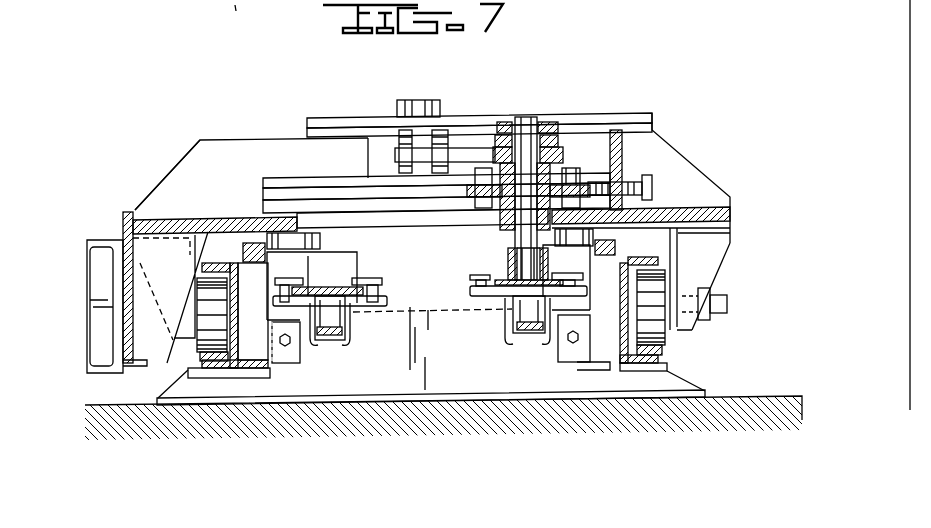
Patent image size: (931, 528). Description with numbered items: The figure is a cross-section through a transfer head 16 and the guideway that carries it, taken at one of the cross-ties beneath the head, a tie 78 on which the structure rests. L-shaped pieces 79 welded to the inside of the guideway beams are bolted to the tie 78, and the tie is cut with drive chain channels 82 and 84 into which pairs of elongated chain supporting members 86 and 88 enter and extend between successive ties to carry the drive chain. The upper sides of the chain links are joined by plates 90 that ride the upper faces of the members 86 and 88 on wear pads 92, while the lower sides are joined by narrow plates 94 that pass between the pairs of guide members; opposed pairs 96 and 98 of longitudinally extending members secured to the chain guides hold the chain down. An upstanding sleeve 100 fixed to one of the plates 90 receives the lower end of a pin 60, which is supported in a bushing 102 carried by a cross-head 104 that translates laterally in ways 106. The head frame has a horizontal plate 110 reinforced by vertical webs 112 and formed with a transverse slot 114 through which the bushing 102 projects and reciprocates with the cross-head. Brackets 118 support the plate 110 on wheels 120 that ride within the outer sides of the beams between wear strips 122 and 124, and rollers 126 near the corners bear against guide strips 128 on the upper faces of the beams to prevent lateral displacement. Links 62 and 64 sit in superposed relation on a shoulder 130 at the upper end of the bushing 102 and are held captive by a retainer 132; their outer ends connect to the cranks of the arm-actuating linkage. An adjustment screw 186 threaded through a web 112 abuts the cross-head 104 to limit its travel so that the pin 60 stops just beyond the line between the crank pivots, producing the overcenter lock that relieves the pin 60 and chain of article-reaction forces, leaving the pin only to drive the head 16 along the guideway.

The transfer head 16 is at (216, 132).
The pin 60 is at (528, 125).
The link 62 is at (496, 142).
The link 64 is at (486, 159).
The base plate 78 is at (370, 370).
The L-shaped piece 79 is at (250, 358).
The drive chain channel 82 is at (333, 347).
The drive chain channel 84 is at (525, 343).
The chain supporting member 86 is at (351, 346).
The chain supporting member 88 is at (548, 346).
The plate 90 is at (319, 289).
The wear pad 92 is at (347, 298).
The narrow plate 94 is at (513, 331).
The longitudinally extending member 96 is at (284, 280).
The longitudinally extending member 98 is at (480, 274).
The sleeve 100 is at (508, 262).
The bushing 102 is at (507, 222).
The cross-head 104 is at (580, 183).
The ways 106 is at (265, 197).
The horizontal plate 110 is at (206, 218).
The vertical web 112 is at (182, 165).
The transverse slot 114 is at (391, 224).
The bracket 118 is at (710, 261).
The wheel 120 is at (207, 340).
The wear strip 122 is at (210, 362).
The wear strip 124 is at (212, 266).
The roller 126 is at (321, 244).
The guide strip 128 is at (254, 244).
The shoulder 130 is at (552, 177).
The retainer 132 is at (504, 125).
The adjustment screw 186 is at (654, 189).